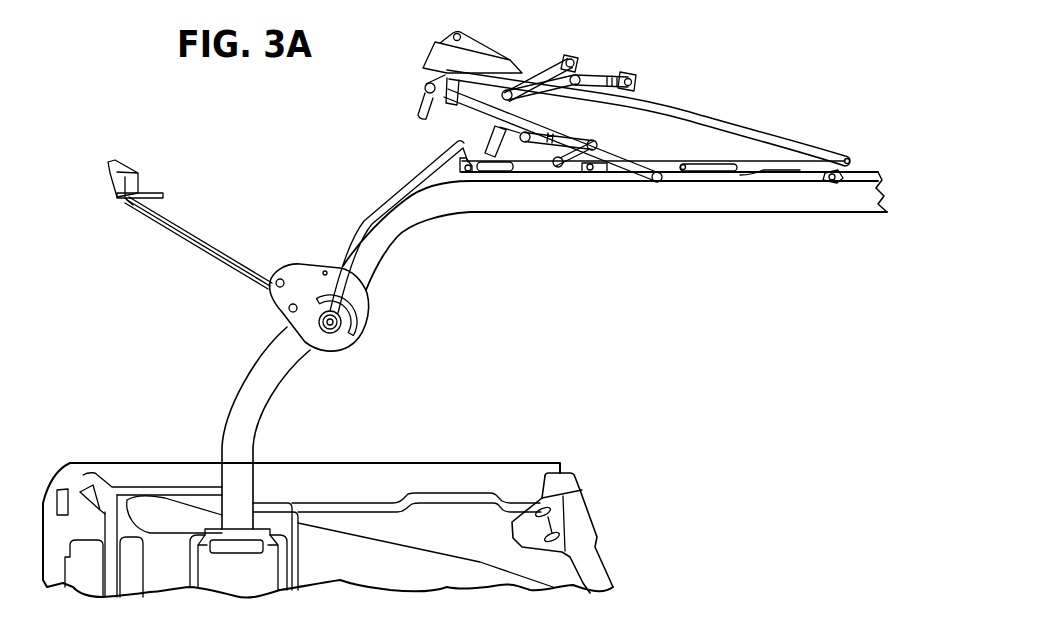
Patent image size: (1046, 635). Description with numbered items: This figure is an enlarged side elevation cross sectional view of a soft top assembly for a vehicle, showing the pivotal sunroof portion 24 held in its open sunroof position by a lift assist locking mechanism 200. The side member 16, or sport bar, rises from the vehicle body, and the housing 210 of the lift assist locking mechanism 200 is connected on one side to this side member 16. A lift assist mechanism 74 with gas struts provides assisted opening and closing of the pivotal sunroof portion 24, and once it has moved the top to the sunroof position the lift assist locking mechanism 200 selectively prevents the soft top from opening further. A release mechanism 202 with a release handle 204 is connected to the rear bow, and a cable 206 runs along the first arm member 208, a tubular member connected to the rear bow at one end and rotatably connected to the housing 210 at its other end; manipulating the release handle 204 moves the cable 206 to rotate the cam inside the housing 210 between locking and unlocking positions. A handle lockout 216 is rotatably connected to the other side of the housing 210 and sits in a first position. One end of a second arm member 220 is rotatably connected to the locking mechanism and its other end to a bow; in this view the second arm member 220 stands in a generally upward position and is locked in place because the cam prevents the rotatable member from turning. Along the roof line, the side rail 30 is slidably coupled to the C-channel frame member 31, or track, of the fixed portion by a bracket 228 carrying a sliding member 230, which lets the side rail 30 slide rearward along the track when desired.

The side member 16 is at (287, 360).
The pivotal sunroof portion 24 is at (755, 110).
The side rail 30 is at (672, 172).
The frame member 31 is at (867, 173).
The lift assist mechanism 74 is at (601, 223).
The lift assist locking mechanism 200 is at (248, 310).
The release mechanism 202 is at (100, 152).
The release handle 204 is at (153, 192).
The cable 206 is at (167, 220).
The first arm member 208 is at (250, 268).
The housing 210 is at (313, 263).
The handle lockout 216 is at (357, 313).
The second arm member 220 is at (410, 183).
The bracket 228 is at (830, 173).
The sliding member 230 is at (833, 177).